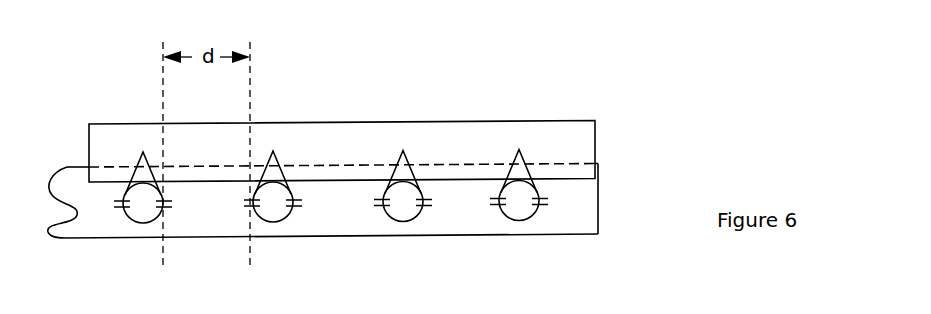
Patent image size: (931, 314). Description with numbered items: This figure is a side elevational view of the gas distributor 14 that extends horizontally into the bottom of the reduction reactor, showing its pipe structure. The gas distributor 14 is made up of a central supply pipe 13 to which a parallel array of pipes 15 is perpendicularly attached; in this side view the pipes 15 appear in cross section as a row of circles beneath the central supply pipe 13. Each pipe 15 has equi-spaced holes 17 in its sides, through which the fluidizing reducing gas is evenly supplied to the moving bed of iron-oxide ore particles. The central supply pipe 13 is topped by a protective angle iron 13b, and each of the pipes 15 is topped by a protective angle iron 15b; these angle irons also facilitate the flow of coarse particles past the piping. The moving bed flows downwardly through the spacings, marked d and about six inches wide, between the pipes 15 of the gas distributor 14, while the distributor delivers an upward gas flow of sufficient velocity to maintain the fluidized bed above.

The central supply pipe 13 is at (332, 212).
The protective angle iron 13b is at (568, 139).
The gas distributor 14 is at (599, 195).
The pipes 15 is at (537, 212).
The protective angle irons 15b is at (513, 166).
The holes 17 is at (430, 203).